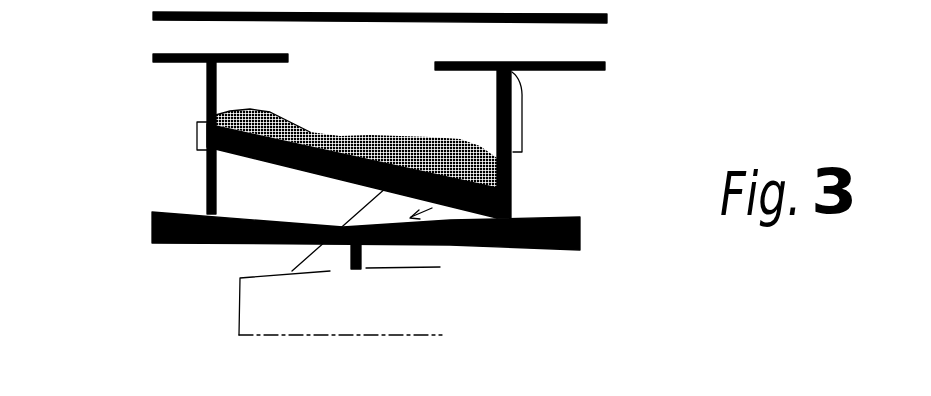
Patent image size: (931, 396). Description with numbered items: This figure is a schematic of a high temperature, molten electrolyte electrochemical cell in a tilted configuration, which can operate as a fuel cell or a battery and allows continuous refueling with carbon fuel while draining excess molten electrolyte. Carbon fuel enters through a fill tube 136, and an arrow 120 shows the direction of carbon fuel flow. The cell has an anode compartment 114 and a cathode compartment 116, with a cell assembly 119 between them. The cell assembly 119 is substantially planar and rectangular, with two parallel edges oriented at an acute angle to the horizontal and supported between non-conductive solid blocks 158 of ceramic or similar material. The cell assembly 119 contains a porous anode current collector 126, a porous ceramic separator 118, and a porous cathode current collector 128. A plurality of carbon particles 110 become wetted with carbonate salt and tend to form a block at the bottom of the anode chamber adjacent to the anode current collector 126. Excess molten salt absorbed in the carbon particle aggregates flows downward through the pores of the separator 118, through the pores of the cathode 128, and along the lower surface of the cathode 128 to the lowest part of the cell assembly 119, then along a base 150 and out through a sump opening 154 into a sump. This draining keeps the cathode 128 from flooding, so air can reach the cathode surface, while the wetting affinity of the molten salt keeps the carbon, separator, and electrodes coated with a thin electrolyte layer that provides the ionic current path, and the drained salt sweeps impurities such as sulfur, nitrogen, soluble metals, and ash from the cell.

The carbon particles 110 is at (410, 152).
The anode compartment 114 is at (462, 113).
The cathode compartment 116 is at (228, 187).
The porous ceramic separator 118 is at (271, 118).
The cell assembly 119 is at (197, 132).
The arrow 120 is at (402, 37).
The porous anode current collector 126 is at (300, 133).
The porous cathode current collector 128 is at (290, 169).
The fill tube 136 is at (169, 34).
The base 150 is at (510, 182).
The sump opening 154 is at (368, 259).
The solid blocks 158 is at (191, 212).